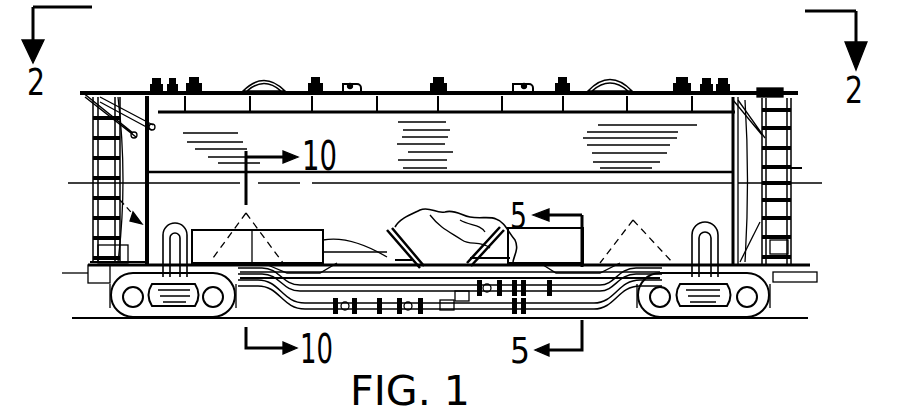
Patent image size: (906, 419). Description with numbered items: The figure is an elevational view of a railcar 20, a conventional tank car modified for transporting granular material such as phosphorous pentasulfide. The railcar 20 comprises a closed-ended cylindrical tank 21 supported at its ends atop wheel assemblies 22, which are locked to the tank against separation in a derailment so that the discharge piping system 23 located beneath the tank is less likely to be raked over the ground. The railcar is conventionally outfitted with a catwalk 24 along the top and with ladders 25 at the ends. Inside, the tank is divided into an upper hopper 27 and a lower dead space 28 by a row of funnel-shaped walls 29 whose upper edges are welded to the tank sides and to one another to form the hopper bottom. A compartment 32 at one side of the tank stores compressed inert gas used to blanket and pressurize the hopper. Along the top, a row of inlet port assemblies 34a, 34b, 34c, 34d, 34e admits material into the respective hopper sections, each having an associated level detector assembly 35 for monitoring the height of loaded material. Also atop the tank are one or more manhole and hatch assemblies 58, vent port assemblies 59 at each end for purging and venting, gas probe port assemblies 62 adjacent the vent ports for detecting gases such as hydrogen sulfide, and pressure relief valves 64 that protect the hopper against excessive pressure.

The railcar 20 is at (78, 125).
The cylindrical tank 21 is at (122, 157).
The wheel assemblies 22 is at (92, 302).
The discharge piping system 23 is at (260, 309).
The catwalk 24 is at (103, 94).
The ladders 25 is at (95, 210).
The upper hopper 27 is at (418, 230).
The lower dead space 28 is at (385, 258).
The funnel-shaped walls 29 is at (446, 255).
The compartment 32 is at (133, 227).
The inlet port assembly 34a is at (193, 77).
The inlet port assembly 34b is at (316, 78).
The inlet port assembly 34c is at (438, 78).
The inlet port assembly 34d is at (562, 78).
The inlet port assembly 34e is at (684, 80).
The level detector assembly 35 is at (793, 213).
The manhole and hatch assembly 58 is at (268, 78).
The vent port assemblies 59 is at (157, 76).
The gas probe port assembly 62 is at (182, 50).
The pressure relief valves 64 is at (352, 82).